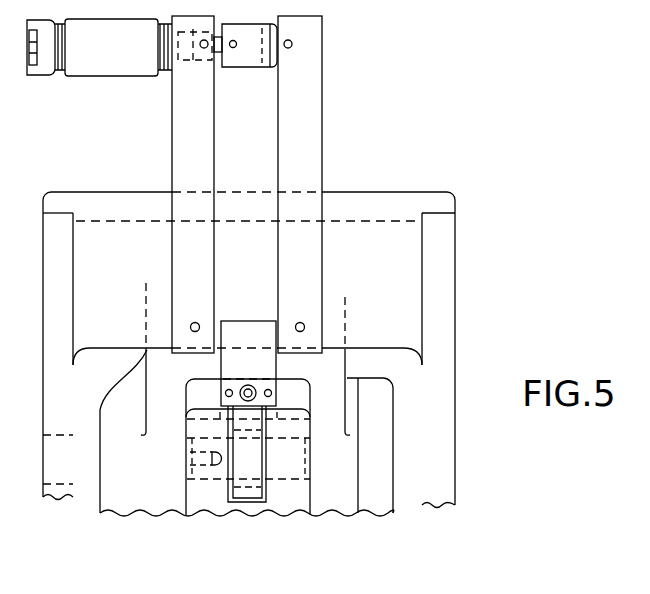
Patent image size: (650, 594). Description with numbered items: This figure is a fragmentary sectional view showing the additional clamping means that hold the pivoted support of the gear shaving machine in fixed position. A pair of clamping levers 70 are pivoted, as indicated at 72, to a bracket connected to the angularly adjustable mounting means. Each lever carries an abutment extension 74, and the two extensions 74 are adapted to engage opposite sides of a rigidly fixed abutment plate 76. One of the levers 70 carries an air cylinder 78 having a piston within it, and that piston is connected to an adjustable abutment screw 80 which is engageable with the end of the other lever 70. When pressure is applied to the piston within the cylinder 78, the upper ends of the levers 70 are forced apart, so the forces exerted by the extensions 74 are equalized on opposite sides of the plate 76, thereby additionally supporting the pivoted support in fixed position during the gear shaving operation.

The clamping levers 70 is at (321, 125).
The pivot 72 is at (305, 327).
The abutment extensions 74 is at (273, 351).
The abutment plate 76 is at (256, 330).
The air cylinder 78 is at (123, 68).
The adjustable abutment screw 80 is at (247, 68).